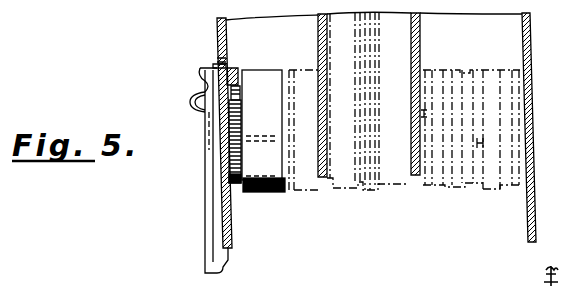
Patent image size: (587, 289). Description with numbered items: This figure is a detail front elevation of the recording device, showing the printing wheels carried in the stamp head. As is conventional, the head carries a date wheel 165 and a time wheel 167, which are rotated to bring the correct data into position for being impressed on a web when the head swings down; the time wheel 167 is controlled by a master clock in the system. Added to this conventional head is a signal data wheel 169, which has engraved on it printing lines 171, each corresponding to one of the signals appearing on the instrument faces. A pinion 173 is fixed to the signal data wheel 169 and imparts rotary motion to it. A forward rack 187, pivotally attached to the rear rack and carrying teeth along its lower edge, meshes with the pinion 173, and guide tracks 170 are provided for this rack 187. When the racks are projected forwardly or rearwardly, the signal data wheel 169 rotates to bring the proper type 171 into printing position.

The forward rack 187 is at (224, 72).
The guide tracks 170 is at (239, 88).
The pinion 173 is at (239, 186).
The printing lines 171 is at (281, 187).
The signal data wheel 169 is at (290, 181).
The time wheel 167 is at (455, 188).
The date wheel 165 is at (497, 191).